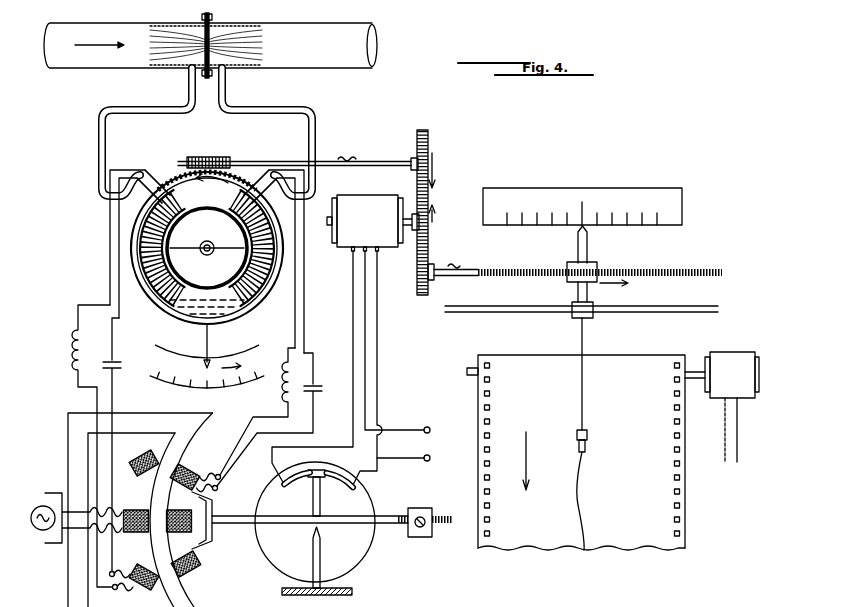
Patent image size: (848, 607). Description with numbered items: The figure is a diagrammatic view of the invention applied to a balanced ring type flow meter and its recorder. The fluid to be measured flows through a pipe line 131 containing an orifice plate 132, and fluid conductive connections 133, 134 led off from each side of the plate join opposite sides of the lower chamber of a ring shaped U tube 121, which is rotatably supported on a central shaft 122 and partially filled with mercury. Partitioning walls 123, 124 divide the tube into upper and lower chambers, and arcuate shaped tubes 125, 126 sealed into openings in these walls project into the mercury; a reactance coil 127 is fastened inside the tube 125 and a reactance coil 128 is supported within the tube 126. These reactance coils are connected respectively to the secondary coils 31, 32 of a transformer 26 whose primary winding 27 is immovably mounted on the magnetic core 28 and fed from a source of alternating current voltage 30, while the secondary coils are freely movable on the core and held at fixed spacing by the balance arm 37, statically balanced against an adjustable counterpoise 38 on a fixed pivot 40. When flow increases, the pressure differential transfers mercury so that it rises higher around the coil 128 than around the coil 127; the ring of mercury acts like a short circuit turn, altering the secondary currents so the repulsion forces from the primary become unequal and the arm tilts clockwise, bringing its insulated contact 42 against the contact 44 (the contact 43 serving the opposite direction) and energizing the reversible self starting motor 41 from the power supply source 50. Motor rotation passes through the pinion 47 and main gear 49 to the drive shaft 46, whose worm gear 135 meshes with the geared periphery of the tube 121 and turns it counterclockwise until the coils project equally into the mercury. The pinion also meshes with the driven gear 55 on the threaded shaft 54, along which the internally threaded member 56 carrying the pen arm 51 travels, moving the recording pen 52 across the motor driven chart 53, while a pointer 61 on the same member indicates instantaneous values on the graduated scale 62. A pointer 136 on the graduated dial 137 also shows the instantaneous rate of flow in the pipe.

The pipe line 131 is at (335, 64).
The orifice plate 132 is at (211, 19).
The fluid conductive connection 133 is at (188, 92).
The fluid conductive connection 134 is at (226, 92).
The worm gear 135 is at (214, 157).
The pointer 136 is at (204, 343).
The graduated dial 137 is at (200, 386).
The ring shaped tube 121 is at (245, 307).
The shaft 122 is at (205, 250).
The partitioning wall 123 is at (178, 206).
The partitioning wall 124 is at (240, 210).
The arcuate shaped tube 125 is at (176, 232).
The arcuate shaped tube 126 is at (246, 233).
The reactance coil 127 is at (140, 236).
The reactance coil 128 is at (272, 234).
The transformer 26 is at (59, 458).
The primary winding 27 is at (133, 510).
The magnetic core 28 is at (137, 413).
The source of alternating current voltage 30 is at (40, 545).
The secondary coil 31 is at (190, 468).
The secondary coil 32 is at (198, 573).
The balance arm 37 is at (234, 516).
The adjustable counterpoise 38 is at (420, 538).
The fixed pivot 40 is at (321, 555).
The reversible self starting motor 41 is at (352, 256).
The contact 42 is at (312, 470).
The contact 43 is at (293, 490).
The contact 44 is at (333, 488).
The drive shaft 46 is at (378, 161).
The pinion 47 is at (430, 225).
The main gear 49 is at (430, 144).
The power supply source 50 is at (424, 443).
The pen arm 51 is at (586, 340).
The recording pen 52 is at (590, 436).
The chart 53 is at (523, 355).
The threaded shaft 54 is at (492, 275).
The driven gear 55 is at (421, 297).
The internally threaded member 56 is at (590, 264).
The pointer 61 is at (576, 236).
The graduated scale 62 is at (634, 203).